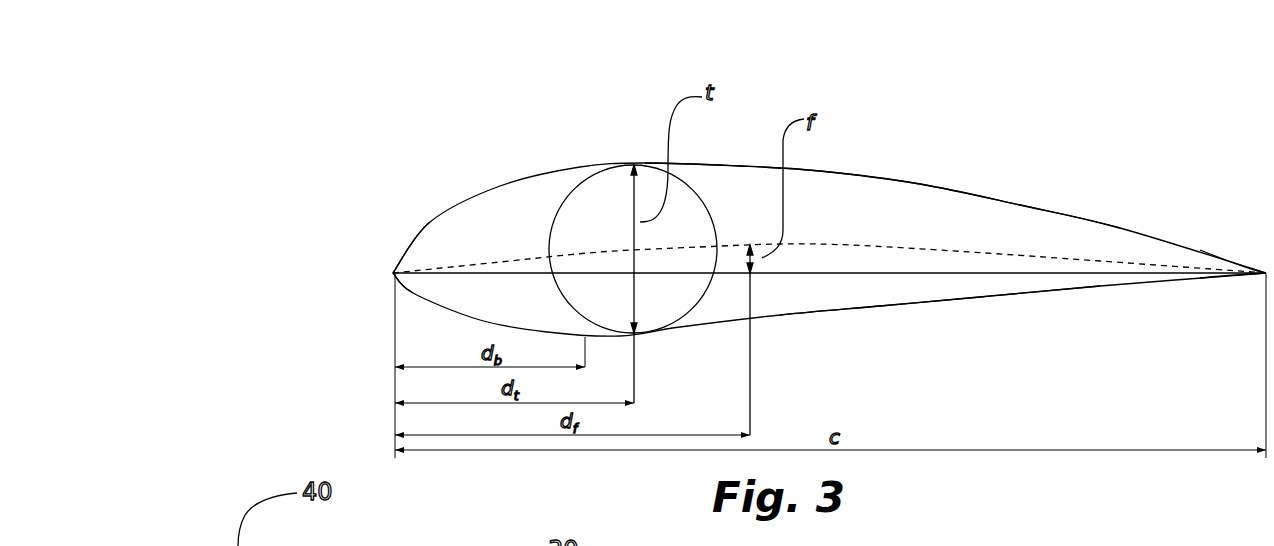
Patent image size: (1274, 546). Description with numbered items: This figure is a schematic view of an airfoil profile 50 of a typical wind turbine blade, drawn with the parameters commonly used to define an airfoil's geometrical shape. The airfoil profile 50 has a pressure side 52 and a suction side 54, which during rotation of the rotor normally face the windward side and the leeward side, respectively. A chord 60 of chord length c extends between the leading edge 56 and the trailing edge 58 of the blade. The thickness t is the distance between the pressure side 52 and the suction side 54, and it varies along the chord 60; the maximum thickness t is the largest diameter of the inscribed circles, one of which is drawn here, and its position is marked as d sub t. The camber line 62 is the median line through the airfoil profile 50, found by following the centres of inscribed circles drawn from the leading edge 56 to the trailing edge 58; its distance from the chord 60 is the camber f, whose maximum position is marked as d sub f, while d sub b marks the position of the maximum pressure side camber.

The airfoil profile 50 is at (829, 173).
The pressure side 52 is at (1005, 302).
The suction side 54 is at (942, 185).
The leading edge 56 is at (393, 273).
The trailing edge 58 is at (1266, 272).
The chord 60 is at (1048, 270).
The camber line 62 is at (823, 247).